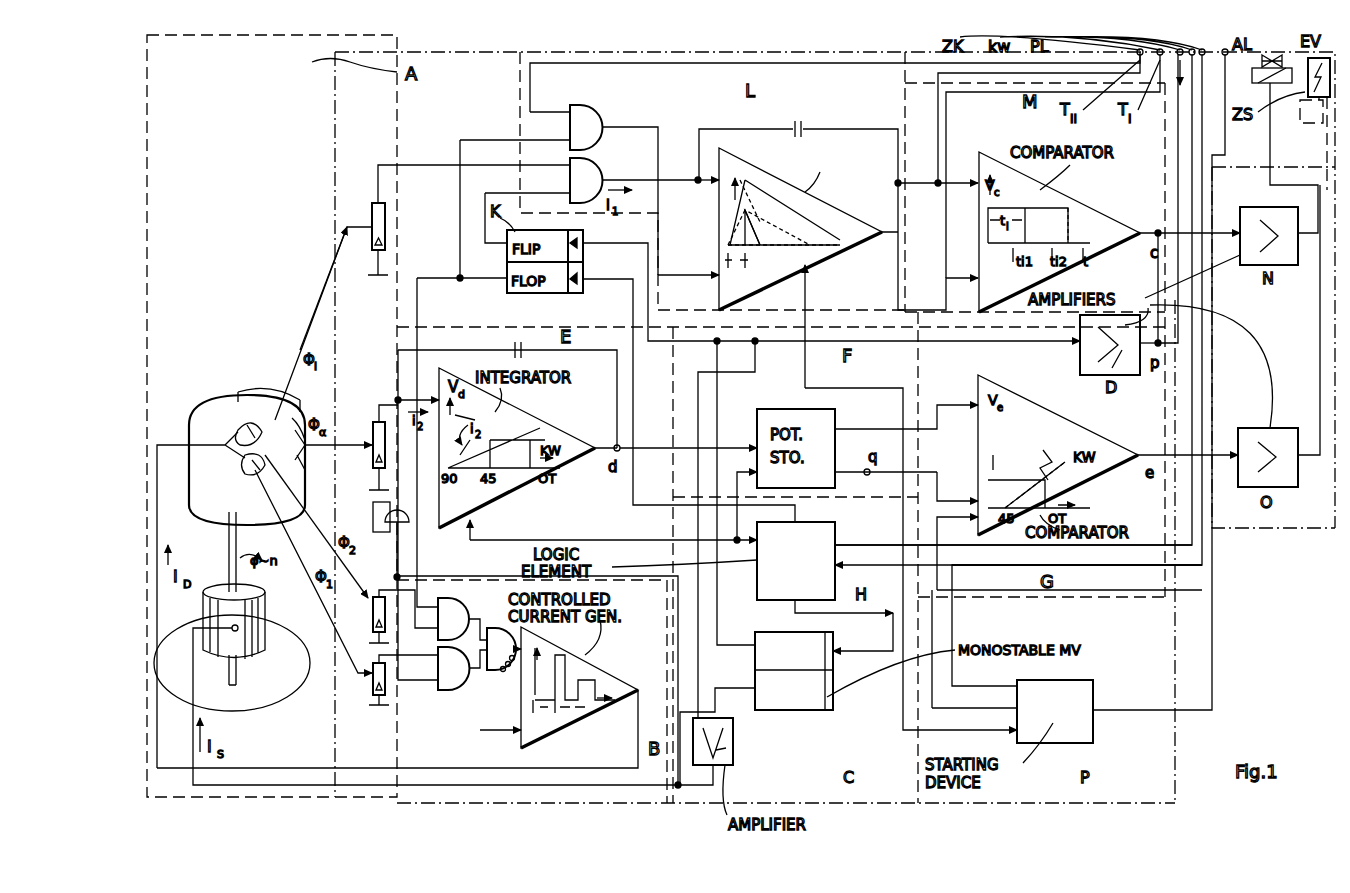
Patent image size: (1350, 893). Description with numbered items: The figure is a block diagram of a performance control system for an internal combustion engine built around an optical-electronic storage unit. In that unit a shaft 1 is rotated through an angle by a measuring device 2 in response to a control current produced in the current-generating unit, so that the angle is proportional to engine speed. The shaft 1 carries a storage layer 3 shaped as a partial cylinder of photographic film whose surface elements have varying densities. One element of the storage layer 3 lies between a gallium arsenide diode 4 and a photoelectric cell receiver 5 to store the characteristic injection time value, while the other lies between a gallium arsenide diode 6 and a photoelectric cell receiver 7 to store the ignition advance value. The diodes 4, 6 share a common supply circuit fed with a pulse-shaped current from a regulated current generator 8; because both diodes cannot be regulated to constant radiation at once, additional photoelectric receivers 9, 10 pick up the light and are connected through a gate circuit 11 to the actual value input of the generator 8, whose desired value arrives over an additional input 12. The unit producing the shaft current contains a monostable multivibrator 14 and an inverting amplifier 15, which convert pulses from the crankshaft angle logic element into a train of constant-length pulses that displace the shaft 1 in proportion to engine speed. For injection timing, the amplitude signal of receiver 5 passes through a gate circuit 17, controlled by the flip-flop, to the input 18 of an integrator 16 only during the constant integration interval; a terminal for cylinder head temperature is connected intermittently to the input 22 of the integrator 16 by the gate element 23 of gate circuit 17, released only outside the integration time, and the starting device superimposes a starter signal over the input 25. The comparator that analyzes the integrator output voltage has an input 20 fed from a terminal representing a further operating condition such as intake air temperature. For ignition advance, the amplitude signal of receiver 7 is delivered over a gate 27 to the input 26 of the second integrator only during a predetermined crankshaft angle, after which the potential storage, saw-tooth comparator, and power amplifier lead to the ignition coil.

The shaft 1 is at (242, 558).
The measuring device 2 is at (262, 615).
The storage layer 3 is at (305, 470).
The gallium arsenide diode 4 is at (248, 432).
The photoelectric cell receiver 5 is at (372, 218).
The gallium arsenide diode 6 is at (252, 468).
The photoelectric cell receiver 7 is at (375, 440).
The regulated current generator 8 is at (570, 720).
The photoelectric receiver 9 is at (372, 680).
The photoelectric receiver 10 is at (373, 612).
The gate circuit 11 is at (472, 686).
The additional input 12 is at (510, 730).
The monostable multivibrator 14 is at (803, 687).
The inverting amplifier 15 is at (732, 757).
The integrator 16 is at (773, 140).
The gate circuit 17 is at (600, 152).
The integrator input 18 is at (696, 185).
The comparator input 20 is at (938, 190).
The integrator input 22 is at (718, 270).
The gate element 23 is at (581, 120).
The integrator input 25 is at (808, 298).
The integrator input 26 is at (400, 395).
The gate 27 is at (405, 520).